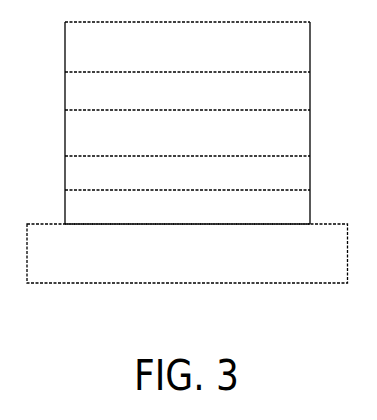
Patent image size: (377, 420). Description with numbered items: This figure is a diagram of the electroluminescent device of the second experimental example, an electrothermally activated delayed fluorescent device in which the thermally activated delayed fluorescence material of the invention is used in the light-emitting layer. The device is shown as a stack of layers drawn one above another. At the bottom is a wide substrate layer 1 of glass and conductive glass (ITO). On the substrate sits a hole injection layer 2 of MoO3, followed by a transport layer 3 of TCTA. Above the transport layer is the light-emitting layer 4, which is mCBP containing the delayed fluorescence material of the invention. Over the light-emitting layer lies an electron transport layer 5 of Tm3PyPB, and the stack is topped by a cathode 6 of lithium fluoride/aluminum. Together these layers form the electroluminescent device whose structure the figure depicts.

The substrate layer 1 is at (187, 253).
The hole injection layer 2 is at (187, 207).
The transport layer 3 is at (187, 173).
The light-emitting layer 4 is at (187, 133).
The electron transport layer 5 is at (187, 91).
The cathode 6 is at (187, 47).